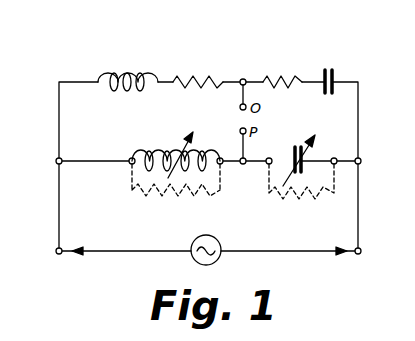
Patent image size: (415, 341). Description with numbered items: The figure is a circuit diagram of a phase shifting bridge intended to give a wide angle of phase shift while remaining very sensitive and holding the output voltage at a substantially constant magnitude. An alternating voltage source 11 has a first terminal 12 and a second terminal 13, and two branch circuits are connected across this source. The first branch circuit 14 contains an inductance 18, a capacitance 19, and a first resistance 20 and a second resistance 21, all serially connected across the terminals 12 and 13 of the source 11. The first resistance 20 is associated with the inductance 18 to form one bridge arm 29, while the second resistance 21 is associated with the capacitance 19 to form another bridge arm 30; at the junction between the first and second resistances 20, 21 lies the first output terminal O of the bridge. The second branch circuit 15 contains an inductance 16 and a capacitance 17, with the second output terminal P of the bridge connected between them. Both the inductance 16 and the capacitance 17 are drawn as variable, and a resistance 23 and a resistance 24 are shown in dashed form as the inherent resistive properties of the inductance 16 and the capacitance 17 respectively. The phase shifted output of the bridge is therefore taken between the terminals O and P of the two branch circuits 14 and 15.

The alternating voltage source 11 is at (220, 258).
The first terminal 12 is at (57, 249).
The second terminal 13 is at (361, 251).
The first branch circuit 14 is at (102, 121).
The second branch circuit 15 is at (127, 155).
The inductance 16 is at (160, 150).
The capacitance 17 is at (304, 154).
The inductance 18 is at (129, 72).
The capacitance 19 is at (336, 80).
The first resistance 20 is at (199, 78).
The second resistance 21 is at (284, 78).
The resistance 23 is at (158, 204).
The resistance 24 is at (318, 204).
The bridge arm 29 is at (172, 107).
The bridge arm 30 is at (305, 107).